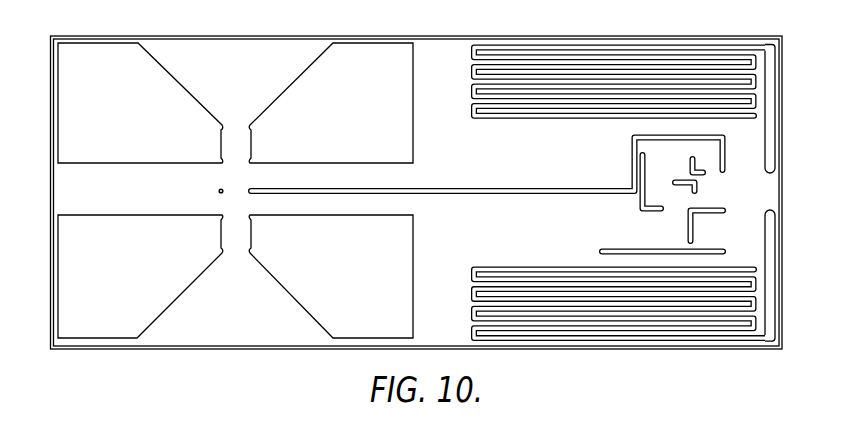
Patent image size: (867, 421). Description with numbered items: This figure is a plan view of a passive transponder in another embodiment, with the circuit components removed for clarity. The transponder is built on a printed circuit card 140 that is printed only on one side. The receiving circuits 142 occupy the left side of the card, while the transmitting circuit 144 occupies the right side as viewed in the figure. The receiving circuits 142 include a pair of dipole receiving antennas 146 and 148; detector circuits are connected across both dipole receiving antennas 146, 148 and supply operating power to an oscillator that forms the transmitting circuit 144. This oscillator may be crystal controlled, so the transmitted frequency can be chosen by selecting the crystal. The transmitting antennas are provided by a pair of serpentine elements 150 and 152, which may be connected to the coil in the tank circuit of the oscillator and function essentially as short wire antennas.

The printed circuit card 140 is at (780, 188).
The receiving circuits 142 is at (235, 190).
The transmitting circuit 144 is at (665, 238).
The dipole receiving antenna 146 is at (290, 276).
The dipole receiving antenna 148 is at (288, 109).
The serpentine element 150 is at (643, 48).
The serpentine element 152 is at (643, 340).